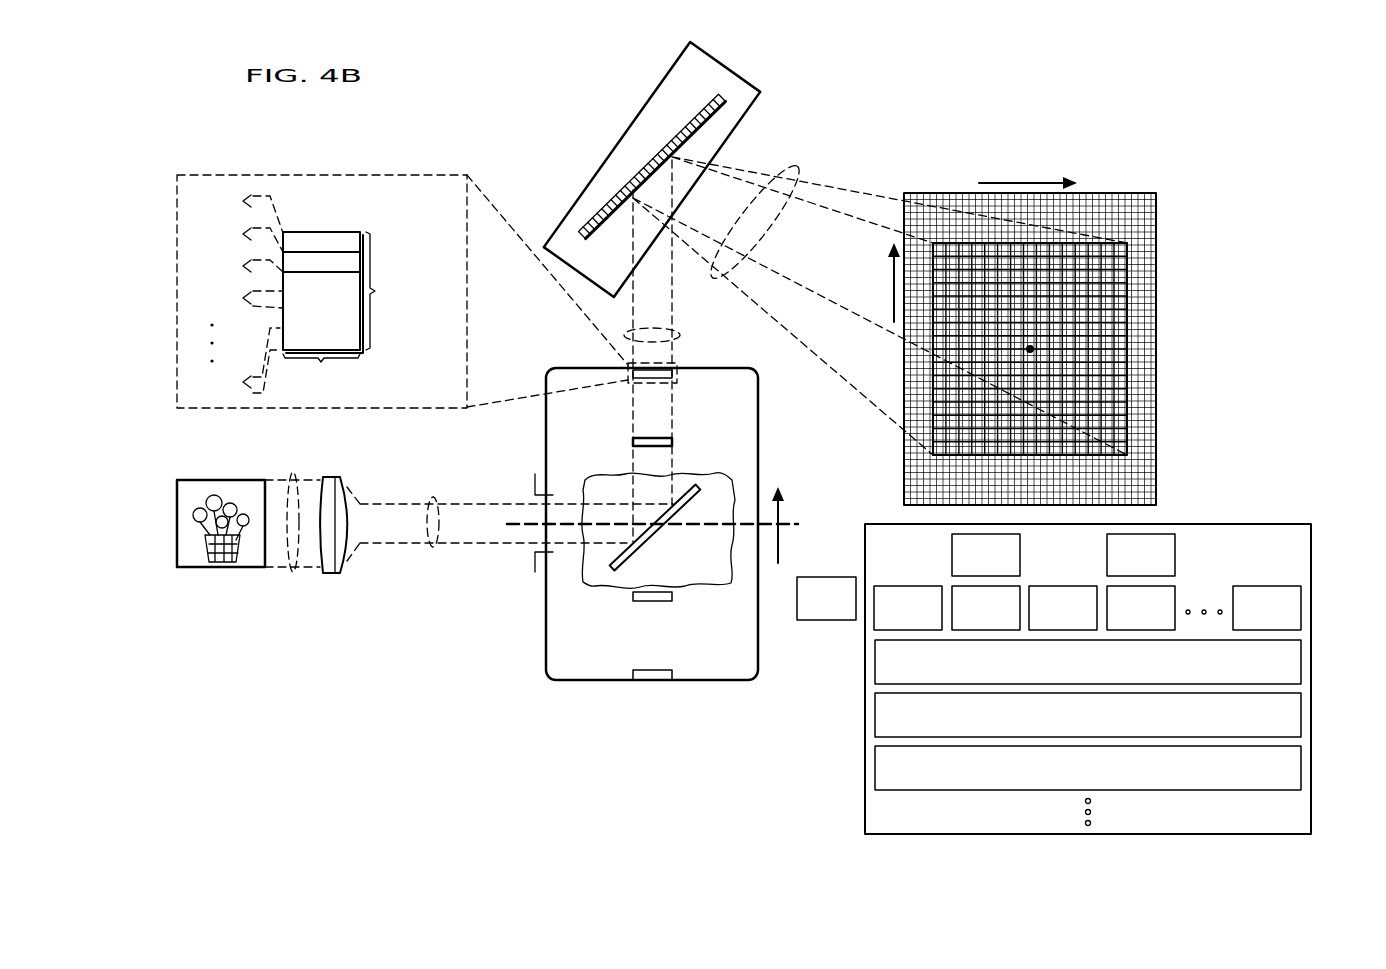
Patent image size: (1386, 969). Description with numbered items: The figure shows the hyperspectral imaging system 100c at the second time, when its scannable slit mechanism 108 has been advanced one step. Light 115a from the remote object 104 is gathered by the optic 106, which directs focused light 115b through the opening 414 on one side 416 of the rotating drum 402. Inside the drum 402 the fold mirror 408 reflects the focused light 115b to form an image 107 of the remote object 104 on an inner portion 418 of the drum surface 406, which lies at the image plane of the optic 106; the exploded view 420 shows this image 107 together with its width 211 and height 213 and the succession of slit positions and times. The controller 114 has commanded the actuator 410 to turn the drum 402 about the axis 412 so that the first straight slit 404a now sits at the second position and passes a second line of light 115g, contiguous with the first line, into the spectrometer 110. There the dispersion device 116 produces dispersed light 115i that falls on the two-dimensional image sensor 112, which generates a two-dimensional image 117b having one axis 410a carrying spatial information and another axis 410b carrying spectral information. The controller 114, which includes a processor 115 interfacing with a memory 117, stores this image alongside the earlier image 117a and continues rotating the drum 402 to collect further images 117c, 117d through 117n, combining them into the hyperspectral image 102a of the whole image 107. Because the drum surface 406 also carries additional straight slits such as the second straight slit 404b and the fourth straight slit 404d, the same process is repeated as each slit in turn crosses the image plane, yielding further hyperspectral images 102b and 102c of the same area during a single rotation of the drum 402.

The hyperspectral imaging system 100c is at (1164, 114).
The hyperspectral image 102a is at (1066, 672).
The hyperspectral image 102b is at (1066, 725).
The hyperspectral image 102c is at (1066, 778).
The remote object 104 is at (221, 568).
The optic 106 is at (333, 476).
The image 107 is at (339, 301).
The scannable slit mechanism 108 is at (812, 640).
The spectrometer 110 is at (618, 140).
The two-dimensional image sensor 112 is at (952, 190).
The controller 114 is at (1200, 517).
The processor 115 is at (969, 565).
The light 115a is at (293, 573).
The focused light 115b is at (433, 547).
The second line of light 115g is at (680, 333).
The dispersed light 115i is at (797, 168).
The dispersion device 116 is at (667, 136).
The memory 117 is at (1124, 565).
The two-dimensional image 117a is at (886, 618).
The two-dimensional image 117b is at (1137, 337).
The two-dimensional image 117c is at (1041, 618).
The two-dimensional image 117d is at (1119, 618).
The two-dimensional image 117n is at (1245, 618).
The width of the image 211 is at (321, 373).
The height of the image 213 is at (394, 291).
The drum 402 is at (594, 681).
The first straight slit 404a is at (320, 262).
The second straight slit 404b is at (672, 442).
The fourth straight slit 404d is at (672, 597).
The surface 406 is at (609, 634).
The fold mirror 408 is at (660, 530).
The actuator 410 is at (809, 609).
The axis 410a is at (890, 277).
The axis 410b is at (1030, 182).
The axis 412 is at (805, 521).
The opening 414 is at (535, 562).
The side 416 is at (546, 436).
The inner portion 418 is at (417, 379).
The exploded view 420 is at (316, 170).